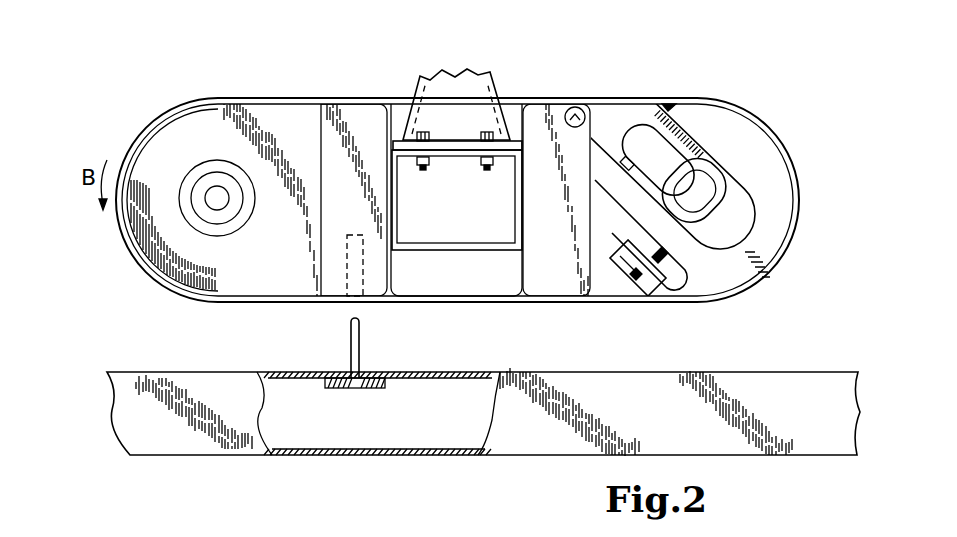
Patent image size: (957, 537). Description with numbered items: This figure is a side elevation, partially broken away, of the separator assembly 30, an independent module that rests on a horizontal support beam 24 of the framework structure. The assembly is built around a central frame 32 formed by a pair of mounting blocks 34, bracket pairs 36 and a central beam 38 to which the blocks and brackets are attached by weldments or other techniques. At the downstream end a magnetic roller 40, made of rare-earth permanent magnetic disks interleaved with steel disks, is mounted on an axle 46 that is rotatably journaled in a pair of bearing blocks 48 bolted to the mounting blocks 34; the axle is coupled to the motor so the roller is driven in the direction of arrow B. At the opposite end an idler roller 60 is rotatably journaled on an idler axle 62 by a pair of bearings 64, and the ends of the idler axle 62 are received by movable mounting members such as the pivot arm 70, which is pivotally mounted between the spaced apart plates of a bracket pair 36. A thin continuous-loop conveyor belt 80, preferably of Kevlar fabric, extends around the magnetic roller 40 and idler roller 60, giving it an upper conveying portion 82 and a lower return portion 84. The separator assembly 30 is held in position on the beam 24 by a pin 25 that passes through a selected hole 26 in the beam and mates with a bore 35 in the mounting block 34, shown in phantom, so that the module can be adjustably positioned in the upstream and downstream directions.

The horizontal support beam 24 is at (779, 380).
The pin 25 is at (362, 337).
The hole 26 is at (288, 380).
The separator assembly 30 is at (770, 47).
The central frame 32 is at (548, 78).
The mounting block 34 is at (346, 102).
The bore 35 is at (348, 265).
The bracket pair 36 is at (562, 108).
The central beam 38 is at (497, 258).
The magnetic roller 40 is at (152, 126).
The axle 46 is at (217, 168).
The bearing block 48 is at (280, 97).
The idler roller 60 is at (748, 143).
The idler axle 62 is at (717, 197).
The bearing 64 is at (713, 228).
The pivot arm 70 is at (669, 126).
The conveyor belt 80 is at (152, 279).
The upper conveying portion 82 is at (512, 108).
The lower return portion 84 is at (452, 303).